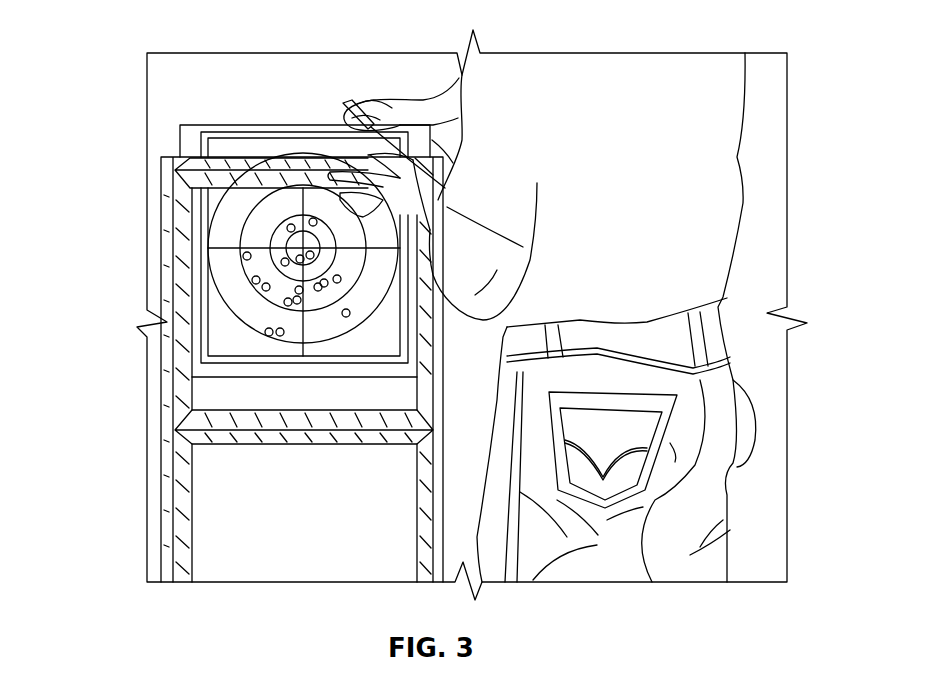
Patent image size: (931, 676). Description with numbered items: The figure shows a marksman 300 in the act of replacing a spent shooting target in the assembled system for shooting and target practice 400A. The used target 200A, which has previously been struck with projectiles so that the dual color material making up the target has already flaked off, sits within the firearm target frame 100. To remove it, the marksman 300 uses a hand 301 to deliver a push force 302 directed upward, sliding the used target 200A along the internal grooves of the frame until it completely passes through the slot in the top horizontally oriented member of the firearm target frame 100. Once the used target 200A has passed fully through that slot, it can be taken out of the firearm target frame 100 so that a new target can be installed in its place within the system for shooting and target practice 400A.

The assembled system for shooting & target practice 400A is at (132, 51).
The firearm target frame 100 is at (127, 189).
The push force 302 is at (192, 125).
The hand 301 is at (355, 107).
The marksman 300 is at (717, 232).
The used target 200A is at (229, 332).